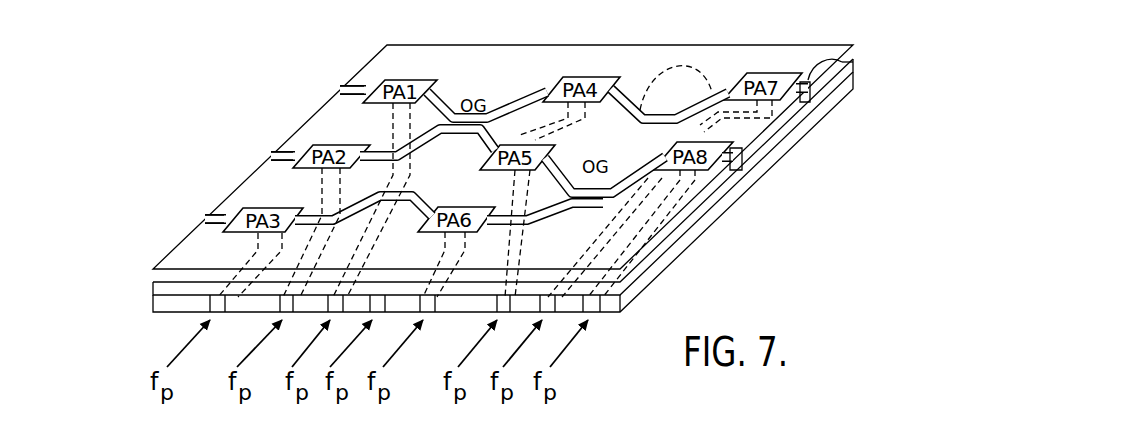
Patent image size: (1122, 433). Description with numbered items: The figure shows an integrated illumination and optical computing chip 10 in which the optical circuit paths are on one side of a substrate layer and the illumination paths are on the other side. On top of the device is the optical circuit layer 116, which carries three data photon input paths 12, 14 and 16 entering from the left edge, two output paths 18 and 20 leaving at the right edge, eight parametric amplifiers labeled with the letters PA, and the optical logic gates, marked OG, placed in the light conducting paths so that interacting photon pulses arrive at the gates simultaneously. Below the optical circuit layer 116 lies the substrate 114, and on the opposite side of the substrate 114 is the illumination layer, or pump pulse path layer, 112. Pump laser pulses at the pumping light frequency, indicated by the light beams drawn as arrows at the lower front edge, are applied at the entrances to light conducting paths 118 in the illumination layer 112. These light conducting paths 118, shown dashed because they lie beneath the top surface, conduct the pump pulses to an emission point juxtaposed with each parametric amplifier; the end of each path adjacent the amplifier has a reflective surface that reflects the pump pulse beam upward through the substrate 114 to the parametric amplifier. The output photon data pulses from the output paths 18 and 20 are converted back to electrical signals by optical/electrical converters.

The optical computing chip 10 is at (460, 170).
The data photon input path 12 is at (357, 83).
The data photon input path 14 is at (300, 152).
The data photon input path 16 is at (215, 214).
The output path 18 is at (835, 62).
The output path 20 is at (737, 143).
The illumination layer 112 is at (153, 300).
The substrate 114 is at (153, 288).
The optical circuit layer 116 is at (153, 270).
The light conducting paths 118 is at (418, 105).